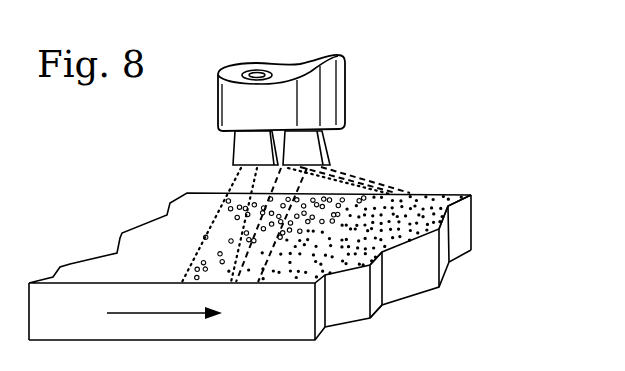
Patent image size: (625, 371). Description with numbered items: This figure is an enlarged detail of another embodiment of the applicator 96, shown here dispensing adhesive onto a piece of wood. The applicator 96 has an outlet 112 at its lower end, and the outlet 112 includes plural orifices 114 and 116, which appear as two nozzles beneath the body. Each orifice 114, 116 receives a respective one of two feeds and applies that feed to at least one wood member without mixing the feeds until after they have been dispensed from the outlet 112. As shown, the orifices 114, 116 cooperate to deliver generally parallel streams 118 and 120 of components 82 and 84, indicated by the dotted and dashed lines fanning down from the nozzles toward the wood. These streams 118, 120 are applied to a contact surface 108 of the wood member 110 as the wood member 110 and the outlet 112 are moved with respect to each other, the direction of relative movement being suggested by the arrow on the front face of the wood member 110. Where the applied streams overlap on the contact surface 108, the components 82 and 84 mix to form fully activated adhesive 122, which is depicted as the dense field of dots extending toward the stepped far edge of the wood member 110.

The applicator 96 is at (292, 102).
The outlet 112 is at (346, 88).
The orifice 114 is at (236, 144).
The orifice 116 is at (330, 148).
The component 84 is at (424, 195).
The fully activated adhesive 122 is at (440, 197).
The wood member 110 is at (450, 268).
The contact surface 108 is at (375, 256).
The stream 118 is at (184, 259).
The component 82 is at (230, 254).
The stream 120 is at (270, 268).